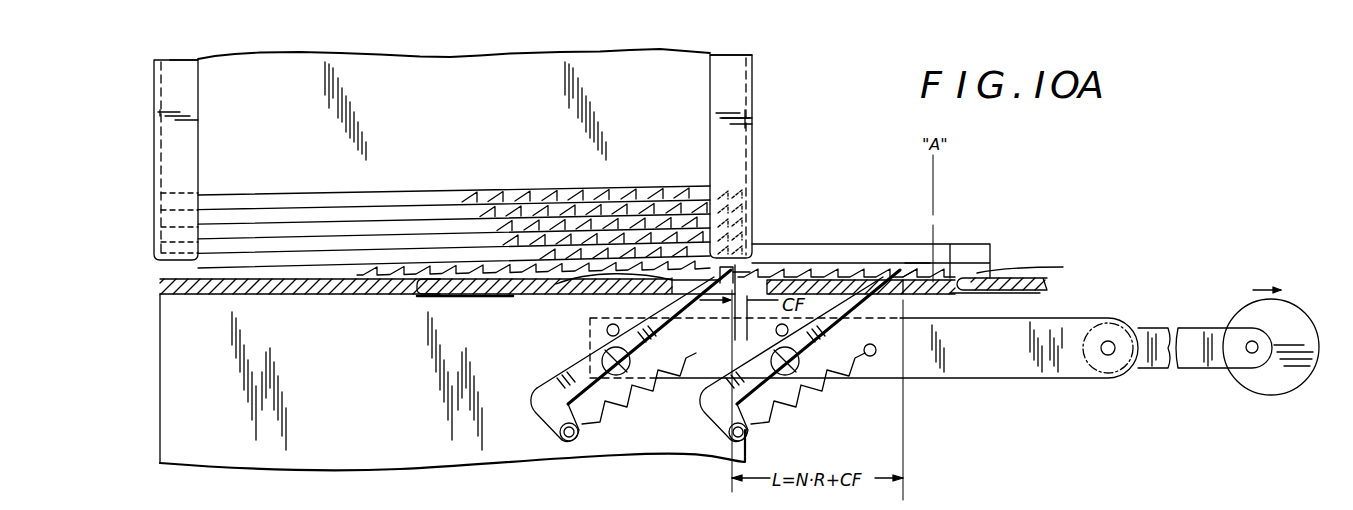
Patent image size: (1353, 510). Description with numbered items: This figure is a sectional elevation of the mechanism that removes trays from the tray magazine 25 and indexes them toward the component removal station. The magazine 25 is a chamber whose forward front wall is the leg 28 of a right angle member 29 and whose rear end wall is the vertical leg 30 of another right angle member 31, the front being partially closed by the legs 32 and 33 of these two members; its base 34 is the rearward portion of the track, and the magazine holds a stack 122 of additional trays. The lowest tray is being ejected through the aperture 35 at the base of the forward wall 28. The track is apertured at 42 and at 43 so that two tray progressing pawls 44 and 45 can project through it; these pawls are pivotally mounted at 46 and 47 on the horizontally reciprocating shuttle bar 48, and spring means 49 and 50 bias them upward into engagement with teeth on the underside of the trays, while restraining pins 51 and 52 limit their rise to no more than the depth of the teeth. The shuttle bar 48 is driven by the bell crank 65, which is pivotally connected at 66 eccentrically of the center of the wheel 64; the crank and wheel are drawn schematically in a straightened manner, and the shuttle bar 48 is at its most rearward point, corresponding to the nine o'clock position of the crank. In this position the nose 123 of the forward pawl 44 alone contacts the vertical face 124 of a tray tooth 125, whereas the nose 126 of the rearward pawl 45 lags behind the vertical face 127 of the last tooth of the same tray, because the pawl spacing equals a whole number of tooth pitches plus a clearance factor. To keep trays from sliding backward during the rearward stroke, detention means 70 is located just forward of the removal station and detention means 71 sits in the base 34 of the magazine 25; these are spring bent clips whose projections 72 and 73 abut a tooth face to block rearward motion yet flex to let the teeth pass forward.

The tray magazine 25 is at (754, 149).
The leg of right angle member 28 is at (752, 113).
The right angle member 29 is at (752, 55).
The vertical leg 30 is at (160, 100).
The right angle member 31 is at (158, 66).
The leg 32 is at (738, 78).
The leg 33 is at (178, 76).
The base of the magazine 34 is at (392, 293).
The aperture 35 is at (750, 266).
The aperture 42 is at (960, 279).
The aperture 43 is at (610, 286).
The tray progressing pawl 44 is at (808, 356).
The tray progressing pawl 45 is at (642, 345).
The pivot 46 is at (778, 335).
The pivot 47 is at (618, 362).
The shuttle bar 48 is at (968, 372).
The spring means 49 is at (775, 422).
The spring means 50 is at (580, 442).
The restraining pin 51 is at (808, 330).
The restraining pin 52 is at (606, 335).
The wheel 64 is at (1283, 375).
The bell crank 65 is at (1152, 372).
The pivotal connection 66 is at (1250, 356).
The detention means 70 is at (1025, 297).
The detention means 71 is at (508, 300).
The projection 72 is at (1030, 265).
The projection 73 is at (432, 300).
The stack 122 is at (463, 202).
The nose of the forward pawl 123 is at (920, 286).
The vertical face 124 is at (906, 272).
The tray tooth 125 is at (908, 276).
The nose of the rearward pawl 126 is at (700, 285).
The vertical face 127 is at (770, 270).